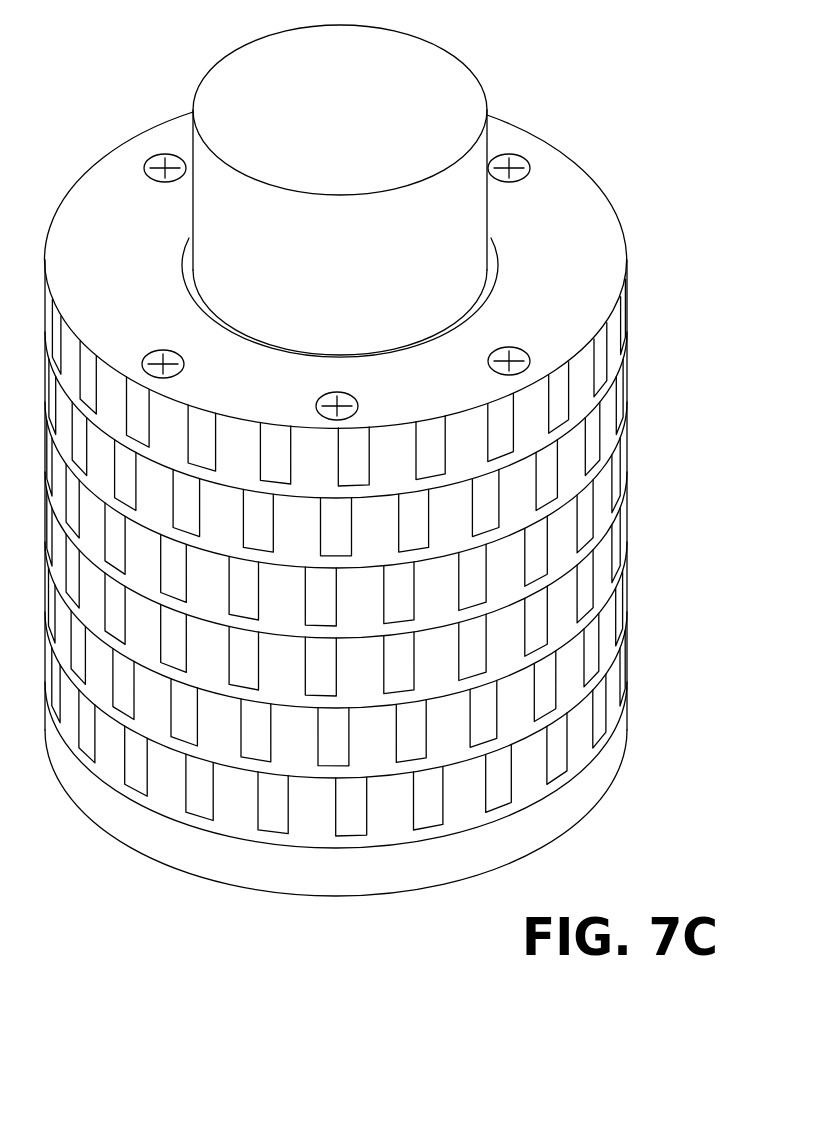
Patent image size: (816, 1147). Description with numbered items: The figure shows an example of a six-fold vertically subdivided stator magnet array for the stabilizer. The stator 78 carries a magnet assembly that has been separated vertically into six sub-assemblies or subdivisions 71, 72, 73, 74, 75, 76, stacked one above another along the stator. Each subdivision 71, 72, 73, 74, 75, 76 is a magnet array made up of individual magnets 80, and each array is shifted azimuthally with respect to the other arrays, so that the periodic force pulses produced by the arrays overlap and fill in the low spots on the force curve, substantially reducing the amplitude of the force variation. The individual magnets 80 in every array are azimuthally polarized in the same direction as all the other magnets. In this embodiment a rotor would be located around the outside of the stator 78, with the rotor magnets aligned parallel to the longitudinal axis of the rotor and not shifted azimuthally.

The first subdivision 71 is at (630, 322).
The second subdivision 72 is at (630, 396).
The third subdivision 73 is at (630, 468).
The fourth subdivision 74 is at (630, 540).
The fifth subdivision 75 is at (630, 606).
The sixth subdivision 76 is at (630, 676).
The stator 78 is at (138, 284).
The individual magnets 80 is at (559, 757).